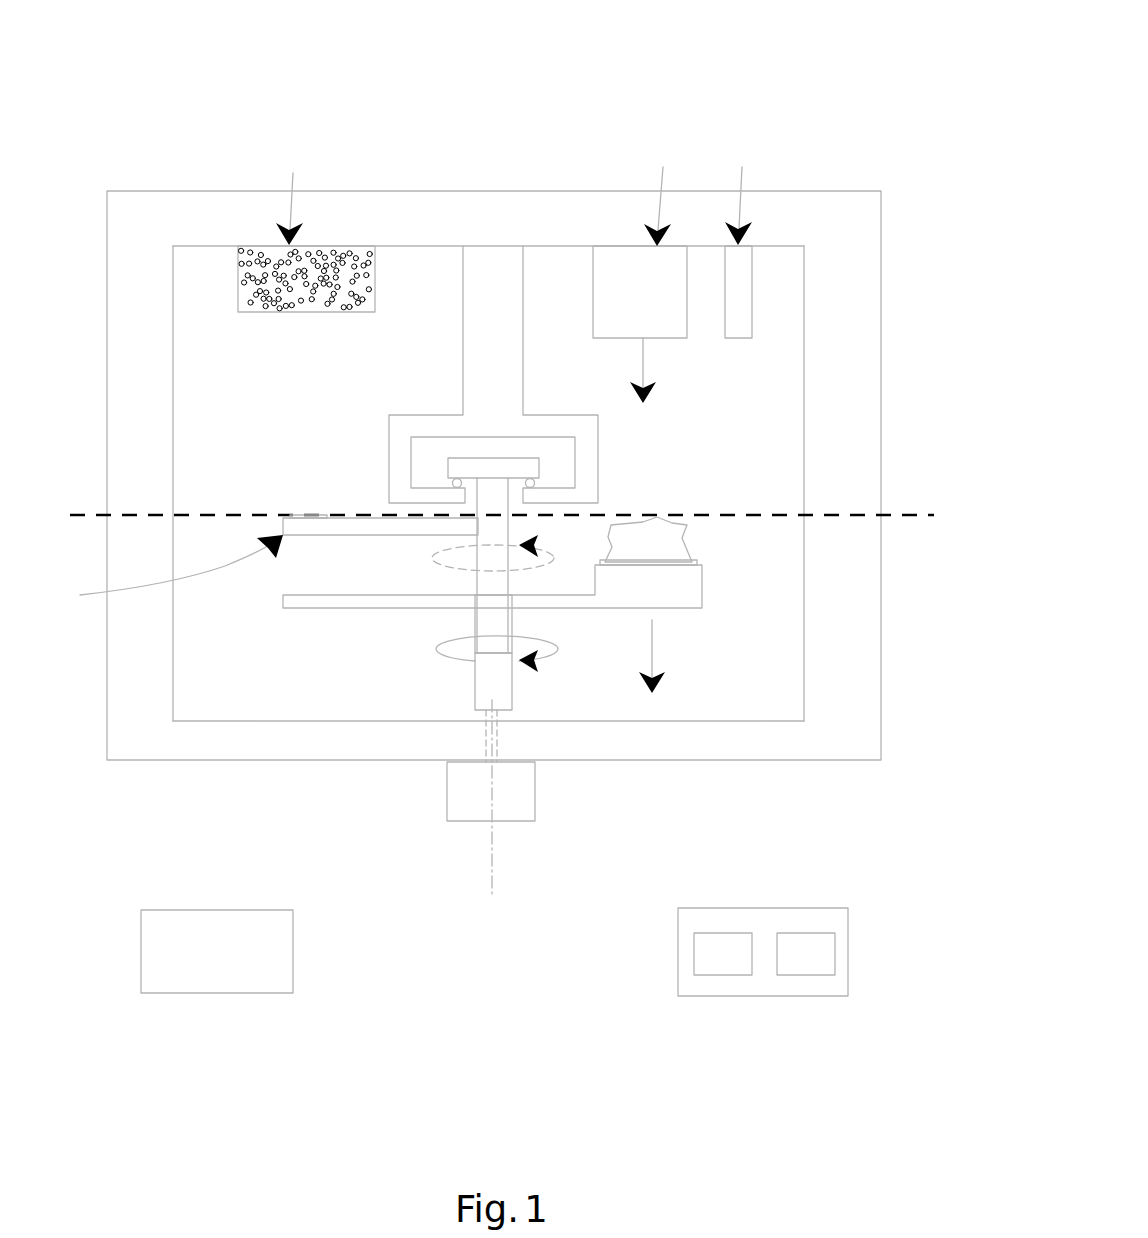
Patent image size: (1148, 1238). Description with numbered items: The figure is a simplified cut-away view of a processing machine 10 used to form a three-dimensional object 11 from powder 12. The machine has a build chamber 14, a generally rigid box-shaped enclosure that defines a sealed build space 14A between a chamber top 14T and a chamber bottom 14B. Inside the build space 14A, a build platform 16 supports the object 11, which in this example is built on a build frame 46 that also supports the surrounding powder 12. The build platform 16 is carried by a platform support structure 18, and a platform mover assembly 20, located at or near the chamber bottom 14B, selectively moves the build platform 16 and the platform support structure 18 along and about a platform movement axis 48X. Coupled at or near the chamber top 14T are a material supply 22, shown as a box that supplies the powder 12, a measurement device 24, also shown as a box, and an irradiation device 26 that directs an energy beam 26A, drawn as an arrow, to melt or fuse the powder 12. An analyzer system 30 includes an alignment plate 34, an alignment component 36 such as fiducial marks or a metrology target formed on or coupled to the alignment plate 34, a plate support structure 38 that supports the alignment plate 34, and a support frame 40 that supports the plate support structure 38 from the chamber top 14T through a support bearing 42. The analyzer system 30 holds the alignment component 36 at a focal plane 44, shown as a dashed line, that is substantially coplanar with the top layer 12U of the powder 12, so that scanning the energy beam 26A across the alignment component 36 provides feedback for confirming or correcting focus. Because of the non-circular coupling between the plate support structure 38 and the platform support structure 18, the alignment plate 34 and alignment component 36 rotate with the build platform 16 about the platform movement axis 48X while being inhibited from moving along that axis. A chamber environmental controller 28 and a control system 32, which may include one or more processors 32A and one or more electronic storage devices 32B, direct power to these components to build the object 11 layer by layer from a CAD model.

The processing machine 10 is at (418, 82).
The object 11 is at (638, 554).
The powder 12 is at (247, 248).
The top layer 12U is at (643, 518).
The build chamber 14 is at (795, 215).
The chamber top 14T is at (552, 245).
The chamber bottom 14B is at (283, 708).
The build space 14A is at (772, 468).
The build platform 16 is at (702, 591).
The platform support structure 18 is at (508, 693).
The platform mover assembly 20 is at (462, 788).
The material supply 22 is at (294, 194).
The measurement device 24 is at (743, 237).
The irradiation device 26 is at (640, 238).
The energy beam 26A is at (643, 368).
The chamber environmental controller 28 is at (204, 964).
The analyzer system 30 is at (164, 572).
The control system 32 is at (773, 997).
The processor 32A is at (723, 954).
The electronic storage device 32B is at (806, 954).
The alignment plate 34 is at (342, 527).
The alignment component 36 is at (302, 513).
The plate support structure 38 is at (498, 627).
The support frame 40 is at (542, 425).
The support bearing 42 is at (456, 479).
The focal plane 44 is at (909, 515).
The build frame 46 is at (697, 562).
The platform movement axis 48X is at (492, 878).